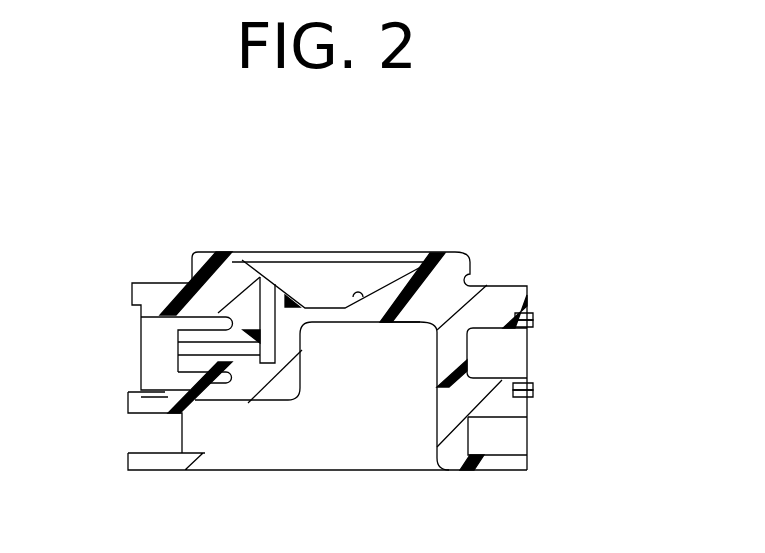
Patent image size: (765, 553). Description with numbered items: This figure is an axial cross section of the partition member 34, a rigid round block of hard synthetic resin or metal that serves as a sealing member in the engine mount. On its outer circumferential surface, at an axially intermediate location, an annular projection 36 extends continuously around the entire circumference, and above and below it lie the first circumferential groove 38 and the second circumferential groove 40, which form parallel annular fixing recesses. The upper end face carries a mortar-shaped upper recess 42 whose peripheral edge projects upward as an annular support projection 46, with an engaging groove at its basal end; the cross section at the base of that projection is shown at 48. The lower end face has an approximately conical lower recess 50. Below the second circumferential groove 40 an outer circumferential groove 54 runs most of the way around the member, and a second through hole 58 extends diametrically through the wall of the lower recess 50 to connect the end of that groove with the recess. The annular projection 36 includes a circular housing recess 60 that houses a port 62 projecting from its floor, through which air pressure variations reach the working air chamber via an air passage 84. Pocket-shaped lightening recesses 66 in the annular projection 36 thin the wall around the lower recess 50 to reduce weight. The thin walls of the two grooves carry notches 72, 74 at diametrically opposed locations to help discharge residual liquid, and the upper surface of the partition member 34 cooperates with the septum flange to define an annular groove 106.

The partition member 34 is at (543, 281).
The annular projection 36 is at (534, 386).
The first circumferential groove 38 is at (533, 316).
The second circumferential groove 40 is at (534, 394).
The upper recess 42 is at (345, 292).
The annular support projection 46 is at (440, 252).
The upper seal 48 is at (195, 278).
The lower recess 50 is at (440, 430).
The outer circumferential groove 54 is at (140, 457).
The second through hole 58 is at (207, 363).
The housing recess 60 is at (158, 384).
The port 62 is at (212, 372).
The lightening recess 66 is at (490, 328).
The notch 72 is at (534, 323).
The notch 74 is at (140, 393).
The air passage 84 is at (267, 347).
The annular groove 106 is at (165, 278).